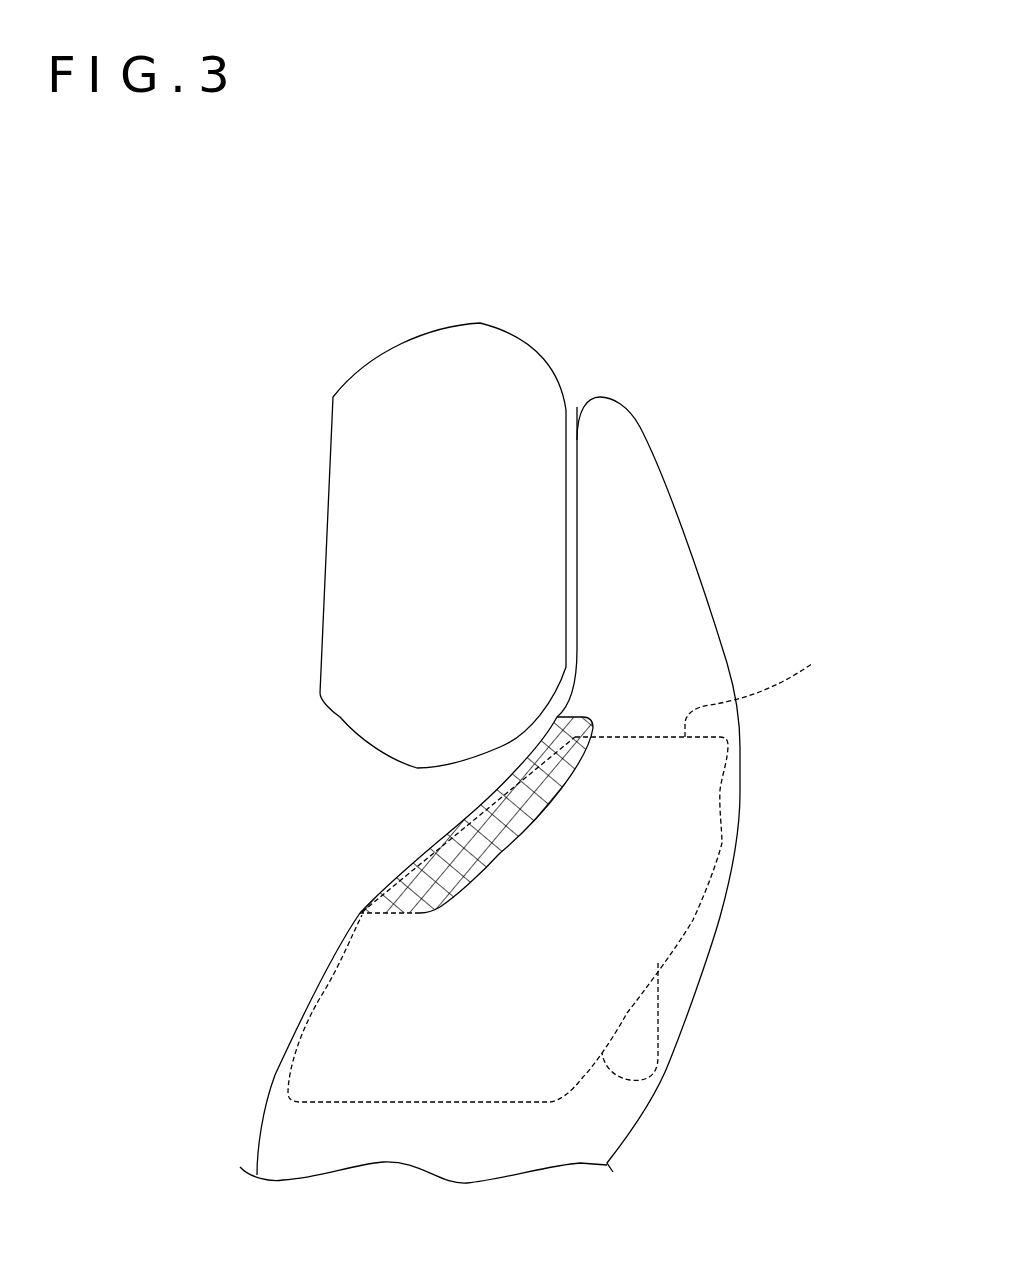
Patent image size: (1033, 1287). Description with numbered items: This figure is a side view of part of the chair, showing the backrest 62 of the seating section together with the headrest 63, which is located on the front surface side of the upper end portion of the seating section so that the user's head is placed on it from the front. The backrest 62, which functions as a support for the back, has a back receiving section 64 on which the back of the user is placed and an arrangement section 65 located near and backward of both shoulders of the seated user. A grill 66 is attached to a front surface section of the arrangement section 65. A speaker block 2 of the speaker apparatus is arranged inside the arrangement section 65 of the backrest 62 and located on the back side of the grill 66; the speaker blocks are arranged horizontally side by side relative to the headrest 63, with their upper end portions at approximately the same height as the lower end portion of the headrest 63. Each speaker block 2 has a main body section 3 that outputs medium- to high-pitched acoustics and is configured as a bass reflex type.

The speaker block 2 is at (805, 657).
The main body section 3 is at (728, 739).
The backrest 62 is at (499, 790).
The headrest 63 is at (457, 353).
The back receiving section 64 is at (273, 1135).
The arrangement section 65 is at (713, 913).
The grill 66 is at (407, 858).